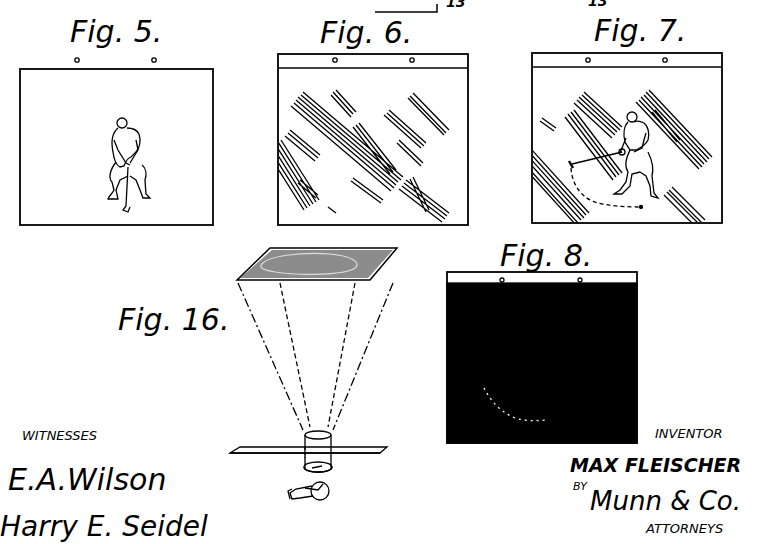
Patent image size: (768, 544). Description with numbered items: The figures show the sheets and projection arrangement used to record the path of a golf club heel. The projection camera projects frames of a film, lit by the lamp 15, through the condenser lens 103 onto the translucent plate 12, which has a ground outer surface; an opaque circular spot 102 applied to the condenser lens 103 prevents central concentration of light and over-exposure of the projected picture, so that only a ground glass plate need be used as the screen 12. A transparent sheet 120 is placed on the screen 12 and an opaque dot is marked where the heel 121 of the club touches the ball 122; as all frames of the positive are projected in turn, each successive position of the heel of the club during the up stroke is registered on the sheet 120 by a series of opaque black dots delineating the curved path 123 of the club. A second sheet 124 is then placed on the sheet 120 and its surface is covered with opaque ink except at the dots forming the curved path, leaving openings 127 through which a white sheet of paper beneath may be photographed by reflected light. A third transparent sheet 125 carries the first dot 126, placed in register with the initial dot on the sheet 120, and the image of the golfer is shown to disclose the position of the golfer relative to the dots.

In FIG. 16, the translucent plate 12 is at (380, 253).
In FIG. 16, the lamp 15 is at (326, 498).
In FIG. 16, the opaque circular spot 102 is at (305, 470).
In FIG. 16, the condenser lens 103 is at (338, 468).
In FIG. 6, the transparent sheet 120 is at (459, 104).
In FIG. 7, the heel of the club 121 is at (571, 160).
In FIG. 7, the ball 122 is at (643, 207).
In FIG. 7, the curved path 123 is at (576, 190).
In FIG. 8, the second sheet 124 is at (640, 358).
In FIG. 5, the third transparent sheet 125 is at (205, 162).
In FIG. 5, the first dot 126 is at (133, 212).
In FIG. 8, the openings 127 is at (487, 445).